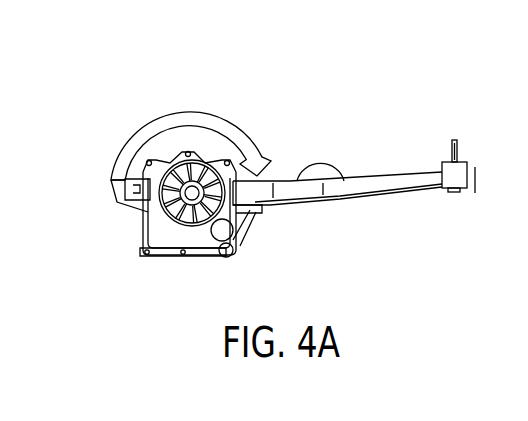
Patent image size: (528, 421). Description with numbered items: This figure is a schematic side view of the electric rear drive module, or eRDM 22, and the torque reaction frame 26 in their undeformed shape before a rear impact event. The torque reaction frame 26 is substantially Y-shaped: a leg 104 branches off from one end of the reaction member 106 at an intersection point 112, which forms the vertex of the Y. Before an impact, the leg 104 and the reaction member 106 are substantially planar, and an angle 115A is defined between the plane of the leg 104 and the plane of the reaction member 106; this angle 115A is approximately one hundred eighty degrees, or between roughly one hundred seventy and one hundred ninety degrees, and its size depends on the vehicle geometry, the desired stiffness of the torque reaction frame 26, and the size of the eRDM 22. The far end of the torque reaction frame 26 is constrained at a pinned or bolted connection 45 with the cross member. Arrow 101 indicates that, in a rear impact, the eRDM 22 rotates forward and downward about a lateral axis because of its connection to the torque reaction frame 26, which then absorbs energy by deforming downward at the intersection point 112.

The arrow 101 is at (172, 111).
The eRDM 22 is at (183, 245).
The leg 104 is at (262, 193).
The reaction member 106 is at (370, 177).
The intersection point 112 is at (335, 206).
The torque reaction frame 26 is at (306, 215).
The angle 115A is at (320, 157).
The pinned or bolted connection 45 is at (462, 190).